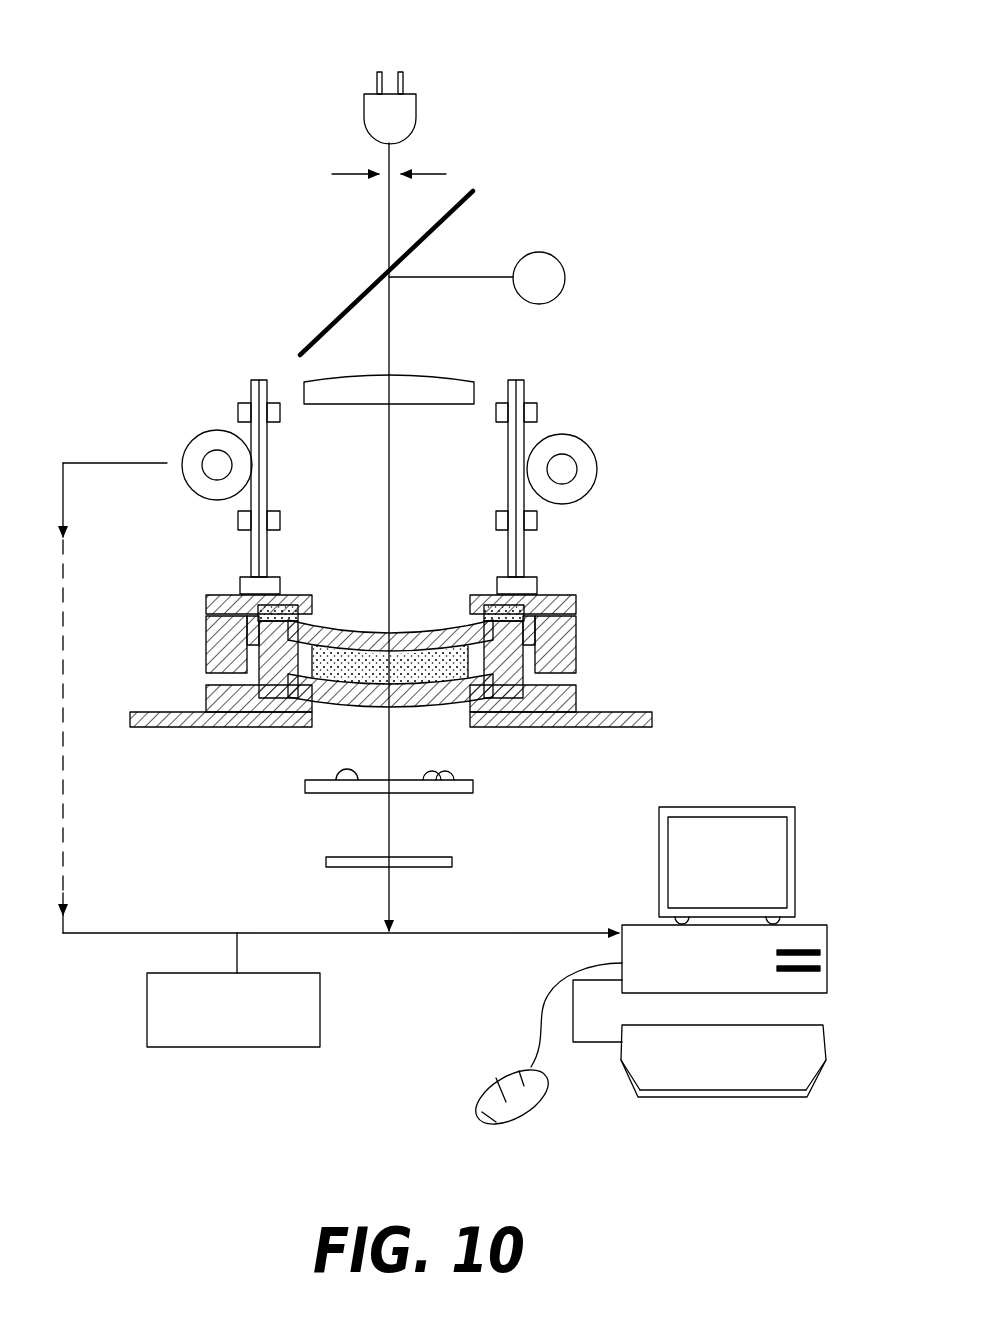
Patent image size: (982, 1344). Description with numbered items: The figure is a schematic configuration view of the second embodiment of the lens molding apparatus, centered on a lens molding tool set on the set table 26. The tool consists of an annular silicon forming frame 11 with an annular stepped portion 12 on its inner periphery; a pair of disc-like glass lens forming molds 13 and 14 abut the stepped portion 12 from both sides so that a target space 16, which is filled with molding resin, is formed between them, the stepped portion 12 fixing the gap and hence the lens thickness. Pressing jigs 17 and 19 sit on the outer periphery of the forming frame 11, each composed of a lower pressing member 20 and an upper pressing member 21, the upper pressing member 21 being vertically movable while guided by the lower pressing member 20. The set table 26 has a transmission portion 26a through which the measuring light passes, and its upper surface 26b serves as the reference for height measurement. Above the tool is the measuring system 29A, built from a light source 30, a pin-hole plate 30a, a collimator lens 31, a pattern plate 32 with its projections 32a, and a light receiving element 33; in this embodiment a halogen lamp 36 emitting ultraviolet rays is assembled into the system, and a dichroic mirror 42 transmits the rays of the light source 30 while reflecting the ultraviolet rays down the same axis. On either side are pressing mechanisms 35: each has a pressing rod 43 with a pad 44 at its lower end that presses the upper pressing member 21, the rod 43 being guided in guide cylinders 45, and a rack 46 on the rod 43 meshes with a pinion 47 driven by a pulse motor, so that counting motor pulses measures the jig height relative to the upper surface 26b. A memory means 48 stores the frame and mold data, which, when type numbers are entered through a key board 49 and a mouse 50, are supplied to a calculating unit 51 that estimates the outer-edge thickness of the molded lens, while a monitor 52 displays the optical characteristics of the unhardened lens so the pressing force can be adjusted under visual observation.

The forming frame 11 is at (555, 632).
The annular stepped portion 12 is at (290, 700).
The lens forming mold 13 is at (435, 630).
The lens forming mold 14 is at (425, 705).
The target space 16 is at (352, 648).
The pressing jig 17 is at (184, 620).
The pressing jig 19 is at (590, 650).
The lower pressing member 20 is at (225, 715).
The upper pressing member 21 is at (215, 594).
The set table 26 is at (623, 712).
The transmission portion 26a is at (445, 725).
The upper surface 26b is at (187, 710).
The measuring system 29A is at (332, 257).
The light source 30 is at (407, 108).
The pin-hole plate 30a is at (438, 170).
The collimator lens 31 is at (450, 380).
The pattern plate 32 is at (367, 793).
The projection 32a is at (347, 769).
The light receiving element 33 is at (438, 867).
The pressing mechanism 35 is at (618, 463).
The halogen lamp 36 is at (555, 268).
The dichroic mirror 42 is at (460, 200).
The pressing rod 43 is at (266, 485).
The pad 44 is at (243, 582).
The guide cylinder 45 is at (243, 405).
The rack 46 is at (267, 453).
The pinion 47 is at (200, 437).
The memory means 48 is at (228, 1033).
The key board 49 is at (735, 1068).
The mouse 50 is at (473, 1093).
The calculating unit 51 is at (653, 940).
The monitor 52 is at (765, 857).